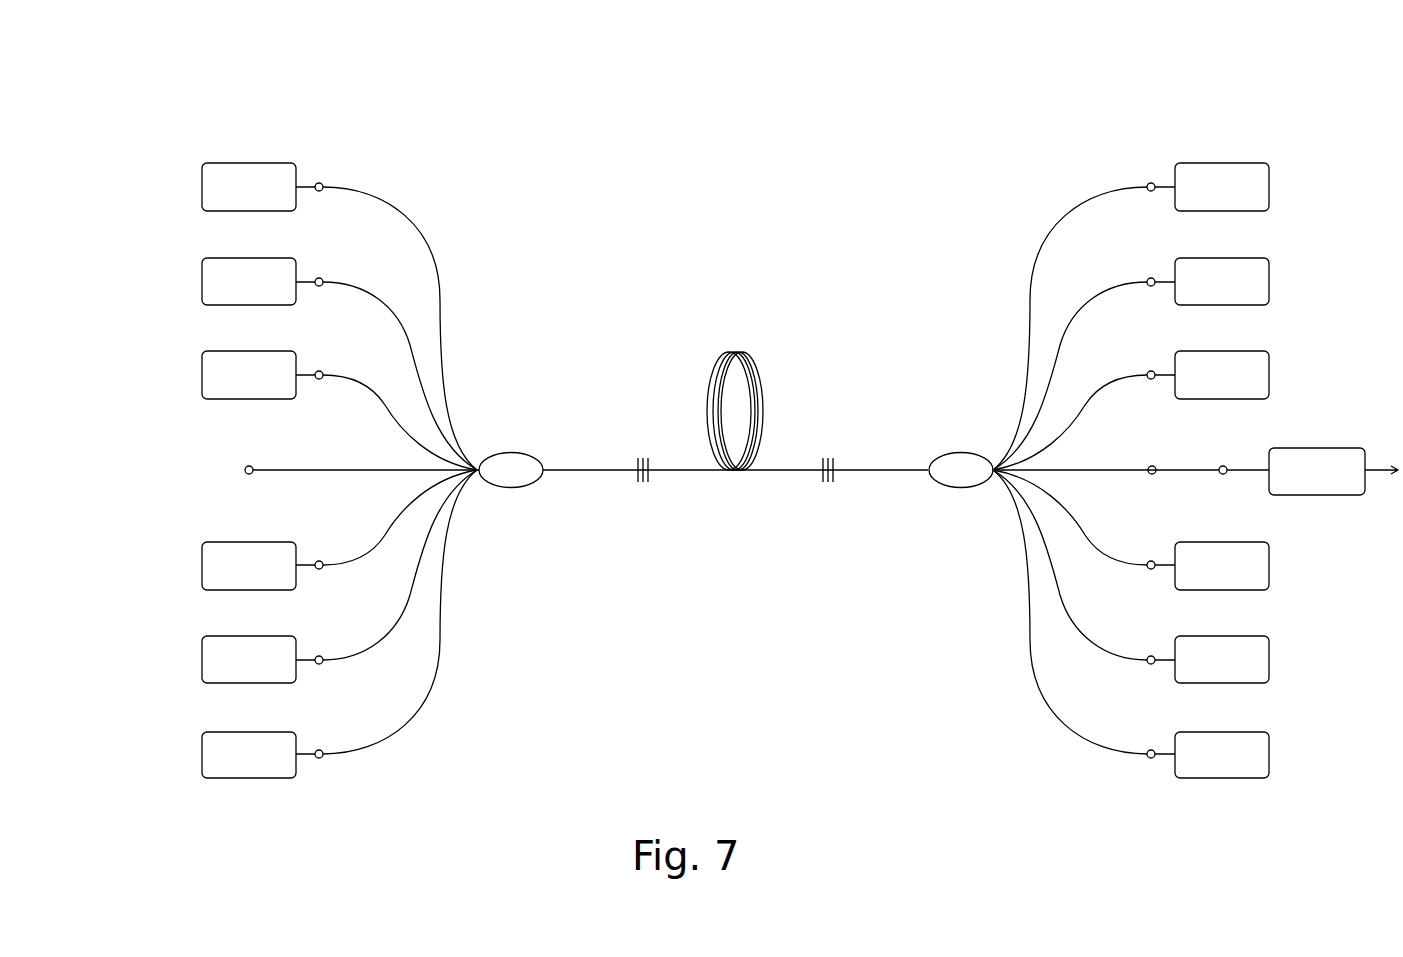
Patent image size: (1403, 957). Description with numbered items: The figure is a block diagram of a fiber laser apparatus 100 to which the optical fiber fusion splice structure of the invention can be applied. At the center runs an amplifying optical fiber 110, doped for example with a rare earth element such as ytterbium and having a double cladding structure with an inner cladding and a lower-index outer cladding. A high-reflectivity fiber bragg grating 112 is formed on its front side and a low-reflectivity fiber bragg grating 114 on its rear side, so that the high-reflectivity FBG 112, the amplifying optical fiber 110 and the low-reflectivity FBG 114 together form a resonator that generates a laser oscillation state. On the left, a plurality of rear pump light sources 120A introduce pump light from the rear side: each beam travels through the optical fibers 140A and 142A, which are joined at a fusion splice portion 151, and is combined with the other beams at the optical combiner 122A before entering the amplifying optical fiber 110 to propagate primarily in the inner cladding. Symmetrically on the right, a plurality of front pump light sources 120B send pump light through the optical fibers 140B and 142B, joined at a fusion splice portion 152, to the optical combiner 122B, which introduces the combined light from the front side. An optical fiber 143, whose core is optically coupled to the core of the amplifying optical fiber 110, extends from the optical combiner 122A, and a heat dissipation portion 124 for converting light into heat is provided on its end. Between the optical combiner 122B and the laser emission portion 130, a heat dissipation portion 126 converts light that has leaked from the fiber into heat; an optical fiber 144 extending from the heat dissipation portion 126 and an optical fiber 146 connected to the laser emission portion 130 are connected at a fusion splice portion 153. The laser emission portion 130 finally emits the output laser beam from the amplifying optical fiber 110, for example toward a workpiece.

The fiber laser apparatus 100 is at (1325, 92).
The amplifying optical fiber 110 is at (758, 362).
The high-reflectivity fiber bragg grating 112 is at (648, 482).
The low-reflectivity fiber bragg grating 114 is at (833, 482).
The rear pump light sources 120A is at (233, 162).
The front pump light sources 120B is at (1237, 162).
The optical combiner 122A is at (527, 488).
The optical combiner 122B is at (943, 488).
The heat dissipation portion 124 is at (245, 466).
The heat dissipation portion 126 is at (1152, 476).
The laser emission portion 130 is at (1310, 497).
The optical fibers 140A is at (315, 183).
The optical fibers 140B is at (1155, 183).
The optical fibers 142A is at (441, 272).
The optical fibers 142B is at (1029, 272).
The optical fiber 143 is at (318, 473).
The optical fiber 144 is at (1183, 470).
The optical fiber 146 is at (1247, 470).
The fusion splice portion 151 is at (326, 187).
The fusion splice portion 152 is at (1144, 187).
The fusion splice portion 153 is at (1223, 476).